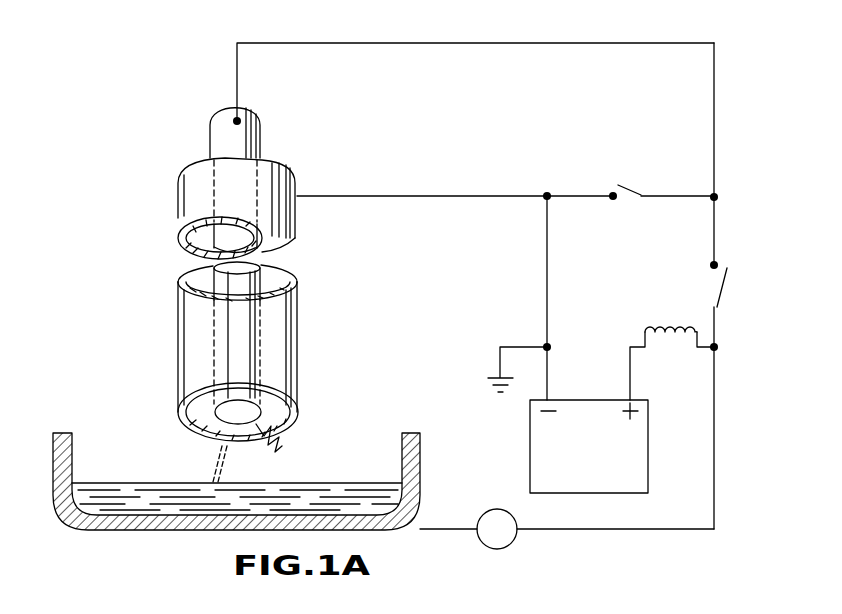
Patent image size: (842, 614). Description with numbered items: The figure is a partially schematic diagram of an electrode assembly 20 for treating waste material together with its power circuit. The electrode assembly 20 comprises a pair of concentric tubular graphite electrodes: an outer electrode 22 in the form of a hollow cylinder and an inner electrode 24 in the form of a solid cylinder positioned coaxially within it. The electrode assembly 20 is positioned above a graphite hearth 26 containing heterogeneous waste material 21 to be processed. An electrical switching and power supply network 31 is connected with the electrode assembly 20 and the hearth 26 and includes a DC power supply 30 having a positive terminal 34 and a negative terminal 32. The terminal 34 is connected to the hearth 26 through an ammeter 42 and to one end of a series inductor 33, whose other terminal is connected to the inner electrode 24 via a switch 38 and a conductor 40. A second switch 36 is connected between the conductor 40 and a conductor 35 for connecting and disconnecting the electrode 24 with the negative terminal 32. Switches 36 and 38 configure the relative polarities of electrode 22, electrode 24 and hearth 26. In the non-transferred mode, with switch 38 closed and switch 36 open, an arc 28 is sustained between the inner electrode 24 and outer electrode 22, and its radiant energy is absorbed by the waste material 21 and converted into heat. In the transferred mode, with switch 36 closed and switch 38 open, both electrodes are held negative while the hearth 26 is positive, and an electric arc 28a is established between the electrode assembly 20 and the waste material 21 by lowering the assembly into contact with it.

The electrode assembly 20 is at (158, 250).
The heterogeneous waste material 21 is at (126, 468).
The outer electrode 22 is at (297, 213).
The inner electrode 24 is at (262, 122).
The graphite hearth 26 is at (362, 528).
The arc 28 is at (285, 446).
The electric arc 28a is at (220, 454).
The DC power supply 30 is at (530, 460).
The electrical switching and power supply network 31 is at (650, 261).
The negative terminal 32 is at (554, 370).
The series inductor 33 is at (668, 328).
The positive terminal 34 is at (637, 370).
The conductor 35 is at (447, 190).
The switch 36 is at (640, 193).
The switch 38 is at (726, 280).
The conductor 40 is at (500, 38).
The ammeter 42 is at (512, 543).